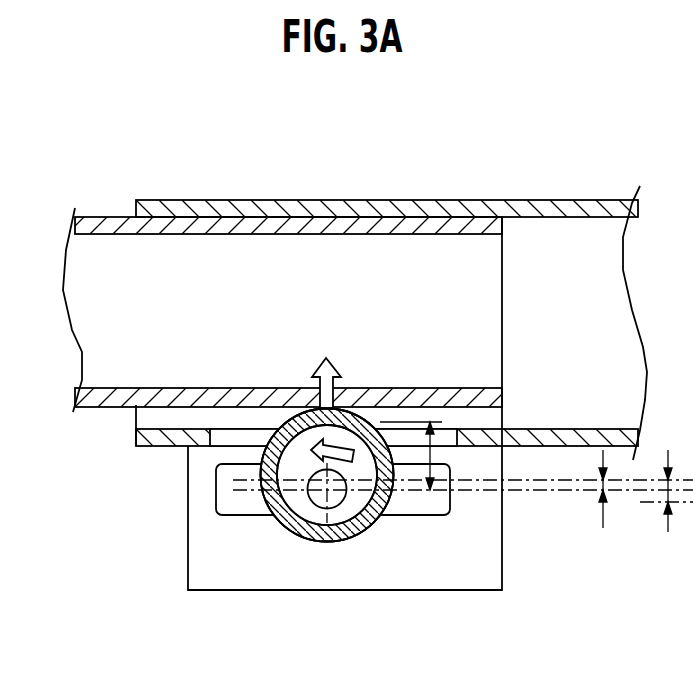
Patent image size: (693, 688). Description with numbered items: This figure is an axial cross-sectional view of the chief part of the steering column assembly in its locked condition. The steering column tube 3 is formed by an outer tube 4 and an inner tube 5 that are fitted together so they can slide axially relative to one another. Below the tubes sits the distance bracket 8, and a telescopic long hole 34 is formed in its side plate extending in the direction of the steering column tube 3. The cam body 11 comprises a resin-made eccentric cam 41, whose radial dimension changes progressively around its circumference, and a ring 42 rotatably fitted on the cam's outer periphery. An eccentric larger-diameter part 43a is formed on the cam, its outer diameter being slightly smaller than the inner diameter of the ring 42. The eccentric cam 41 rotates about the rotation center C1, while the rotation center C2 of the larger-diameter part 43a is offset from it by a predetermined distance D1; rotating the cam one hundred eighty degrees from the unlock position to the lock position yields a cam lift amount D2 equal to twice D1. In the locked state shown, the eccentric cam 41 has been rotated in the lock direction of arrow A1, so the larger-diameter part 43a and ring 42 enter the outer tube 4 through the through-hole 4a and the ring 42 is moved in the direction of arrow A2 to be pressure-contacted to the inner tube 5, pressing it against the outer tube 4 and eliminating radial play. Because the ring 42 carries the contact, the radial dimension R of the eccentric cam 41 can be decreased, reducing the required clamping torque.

The steering column tube 3 is at (355, 282).
The outer tube 4 is at (391, 292).
The through-hole 4a is at (212, 442).
The inner tube 5 is at (113, 215).
The distance bracket 8 is at (483, 548).
The cam body 11 is at (361, 537).
The telescopic long hole 34 is at (237, 513).
The eccentric cam 41 is at (290, 503).
The ring 42 is at (316, 508).
The larger-diameter part 43a is at (259, 451).
The lock direction arrow A1 is at (342, 445).
The ring movement direction arrow A2 is at (328, 357).
The rotation center of eccentric cam C1 is at (327, 490).
The rotation center of larger-diameter part C2 is at (346, 484).
The radial dimension of eccentric cam R is at (435, 455).
The eccentric distance D1 is at (605, 507).
The cam lift amount D2 is at (666, 509).